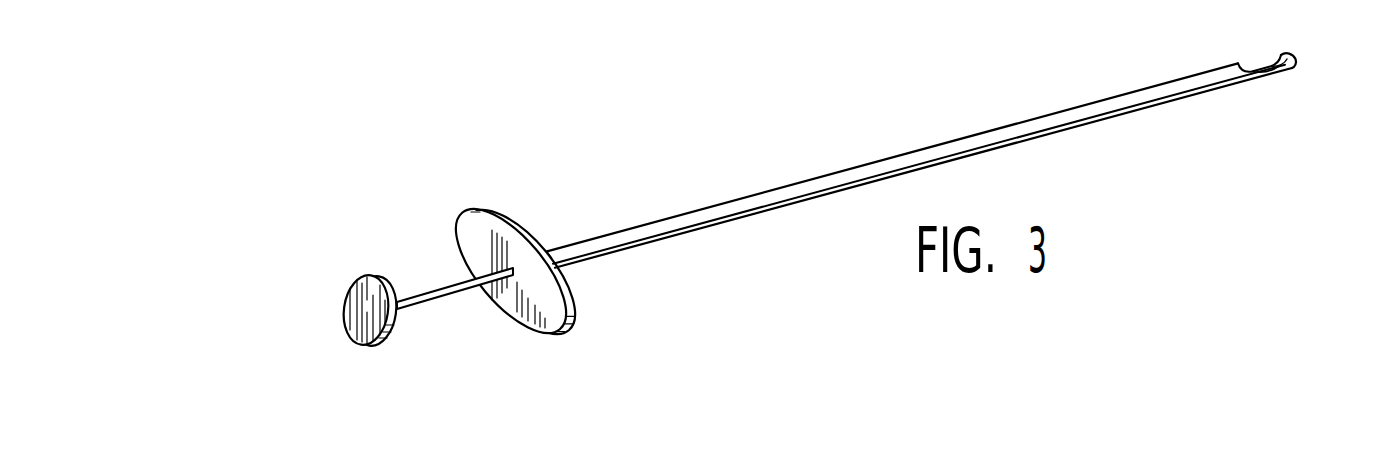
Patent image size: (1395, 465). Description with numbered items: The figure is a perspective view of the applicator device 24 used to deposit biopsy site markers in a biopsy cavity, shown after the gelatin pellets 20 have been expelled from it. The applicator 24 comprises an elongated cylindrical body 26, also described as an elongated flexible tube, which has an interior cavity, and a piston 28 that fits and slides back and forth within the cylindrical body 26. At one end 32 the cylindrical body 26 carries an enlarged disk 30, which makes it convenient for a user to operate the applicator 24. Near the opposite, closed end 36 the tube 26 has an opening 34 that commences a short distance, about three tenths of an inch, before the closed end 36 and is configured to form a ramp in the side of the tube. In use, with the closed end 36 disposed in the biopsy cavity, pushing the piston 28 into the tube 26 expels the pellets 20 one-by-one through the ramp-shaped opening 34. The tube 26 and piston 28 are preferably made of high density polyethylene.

The gelatin pellets 20 is at (366, 6).
The applicator device 24 is at (845, 145).
The elongated cylindrical body 26 is at (1063, 112).
The piston 28 is at (430, 306).
The enlarged disk 30 is at (458, 214).
The one end 32 is at (548, 248).
The opening 34 is at (1262, 63).
The closed end 36 is at (1297, 61).